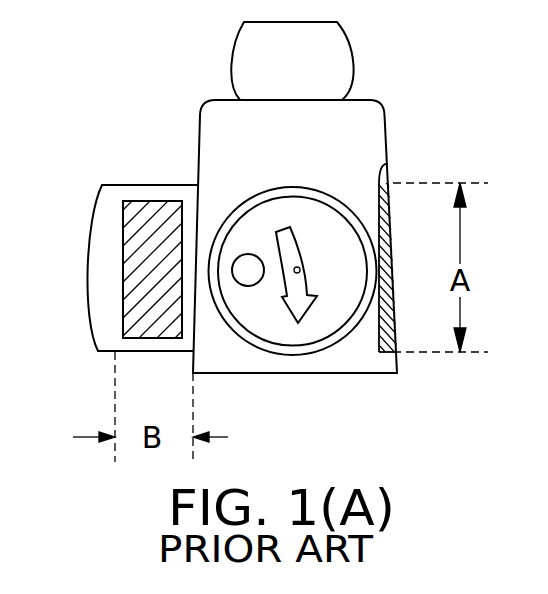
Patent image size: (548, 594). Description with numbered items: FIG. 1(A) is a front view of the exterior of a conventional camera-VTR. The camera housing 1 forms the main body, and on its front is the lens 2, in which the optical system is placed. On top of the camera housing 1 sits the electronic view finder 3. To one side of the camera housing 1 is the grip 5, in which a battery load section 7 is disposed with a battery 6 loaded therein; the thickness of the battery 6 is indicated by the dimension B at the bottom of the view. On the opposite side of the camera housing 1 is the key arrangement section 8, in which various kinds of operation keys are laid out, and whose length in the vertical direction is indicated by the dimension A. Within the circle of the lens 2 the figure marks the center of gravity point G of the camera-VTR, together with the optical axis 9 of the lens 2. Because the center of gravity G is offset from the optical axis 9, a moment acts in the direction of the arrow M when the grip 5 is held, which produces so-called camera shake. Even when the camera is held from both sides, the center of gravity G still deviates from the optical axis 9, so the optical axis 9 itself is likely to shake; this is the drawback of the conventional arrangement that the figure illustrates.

The camera housing 1 is at (373, 123).
The lens 2 is at (328, 345).
The electronic view finder 3 is at (343, 42).
The grip 5 is at (90, 310).
The battery 6 is at (158, 210).
The battery load section 7 is at (127, 220).
The key arrangement section 8 is at (384, 164).
The optical axis 9 is at (301, 269).
The center of gravity point G is at (247, 253).
The arrow indicating direction of moment M is at (293, 240).